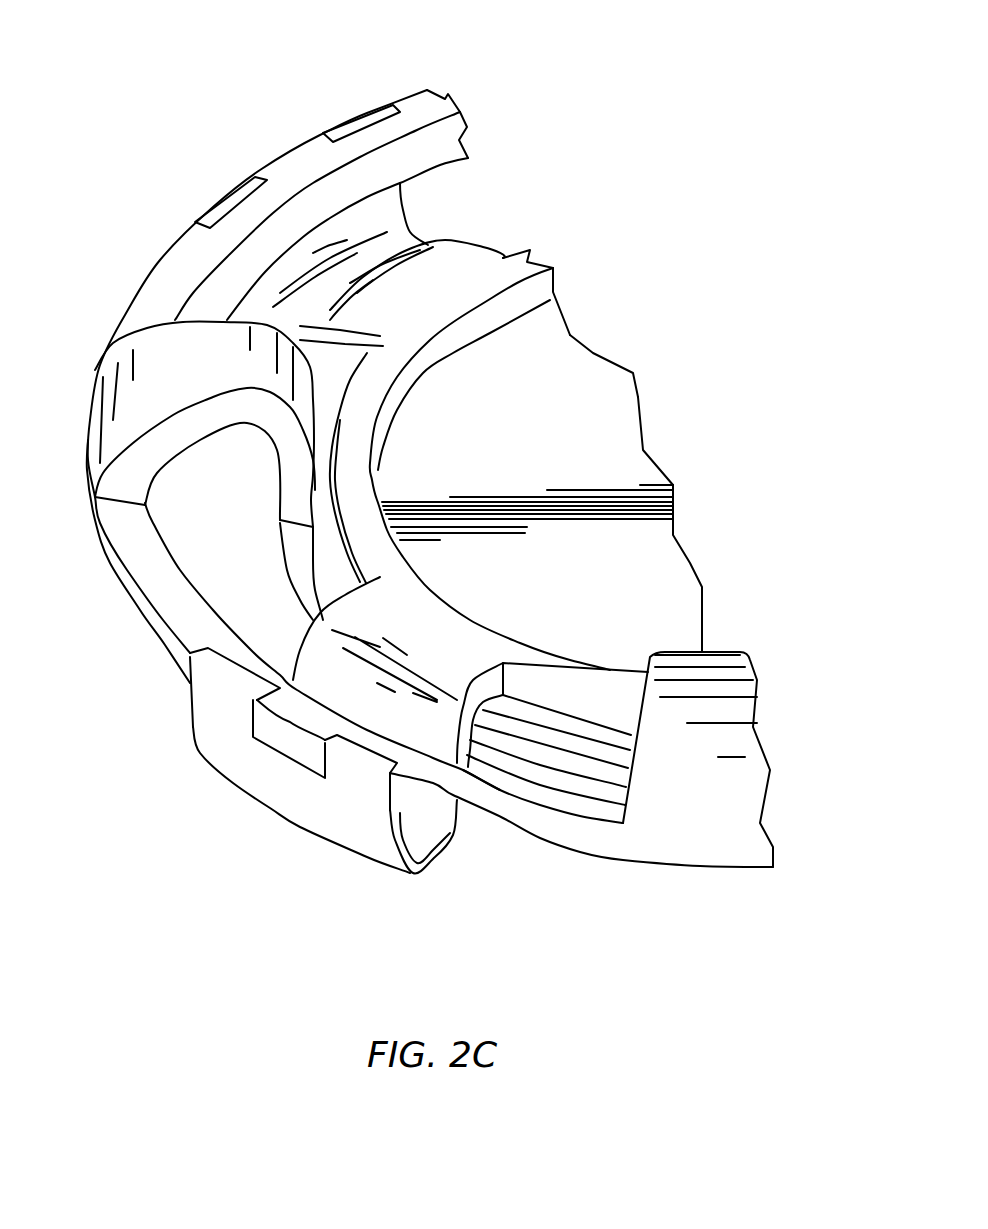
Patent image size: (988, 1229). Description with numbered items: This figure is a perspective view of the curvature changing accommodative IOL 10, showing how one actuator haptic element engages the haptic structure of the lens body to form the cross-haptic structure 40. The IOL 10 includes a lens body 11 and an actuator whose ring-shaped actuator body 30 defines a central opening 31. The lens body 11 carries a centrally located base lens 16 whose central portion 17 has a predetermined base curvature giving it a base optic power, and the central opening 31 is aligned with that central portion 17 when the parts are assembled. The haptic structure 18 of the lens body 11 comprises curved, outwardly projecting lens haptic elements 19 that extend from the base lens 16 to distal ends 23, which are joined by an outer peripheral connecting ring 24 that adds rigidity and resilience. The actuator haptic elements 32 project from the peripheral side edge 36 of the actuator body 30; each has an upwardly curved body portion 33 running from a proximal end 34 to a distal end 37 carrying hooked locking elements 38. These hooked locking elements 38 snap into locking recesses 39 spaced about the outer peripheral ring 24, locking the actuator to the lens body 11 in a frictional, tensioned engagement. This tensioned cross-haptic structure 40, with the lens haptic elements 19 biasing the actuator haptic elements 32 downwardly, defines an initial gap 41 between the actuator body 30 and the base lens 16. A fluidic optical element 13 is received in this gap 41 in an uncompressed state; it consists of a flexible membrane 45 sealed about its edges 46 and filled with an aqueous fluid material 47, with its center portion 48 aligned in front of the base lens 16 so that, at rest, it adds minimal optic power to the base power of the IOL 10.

The IOL 10 is at (117, 44).
The lens body 11 is at (557, 887).
The fluidic optical element 13 is at (648, 577).
The base lens 16 is at (413, 340).
The central portion 17 is at (632, 460).
The haptic structure 18 is at (131, 237).
The lens haptic elements 19 is at (150, 325).
The distal end 23 is at (93, 450).
The outer peripheral connecting ring 24 is at (510, 827).
The actuator body 30 is at (535, 256).
The central opening 31 is at (458, 350).
The actuator haptic elements 32 is at (268, 814).
The body portion 33 is at (410, 873).
The proximal end 34 is at (483, 658).
The peripheral side edge 36 is at (599, 712).
The distal end 37 is at (333, 818).
The hooked locking elements 38 is at (207, 677).
The locking recesses 39 is at (277, 753).
The cross-haptic structure 40 is at (180, 773).
The gap 41 is at (577, 743).
The membrane 45 is at (490, 333).
The edges 46 is at (513, 320).
The fluid material 47 is at (618, 413).
The center portion 48 is at (555, 415).